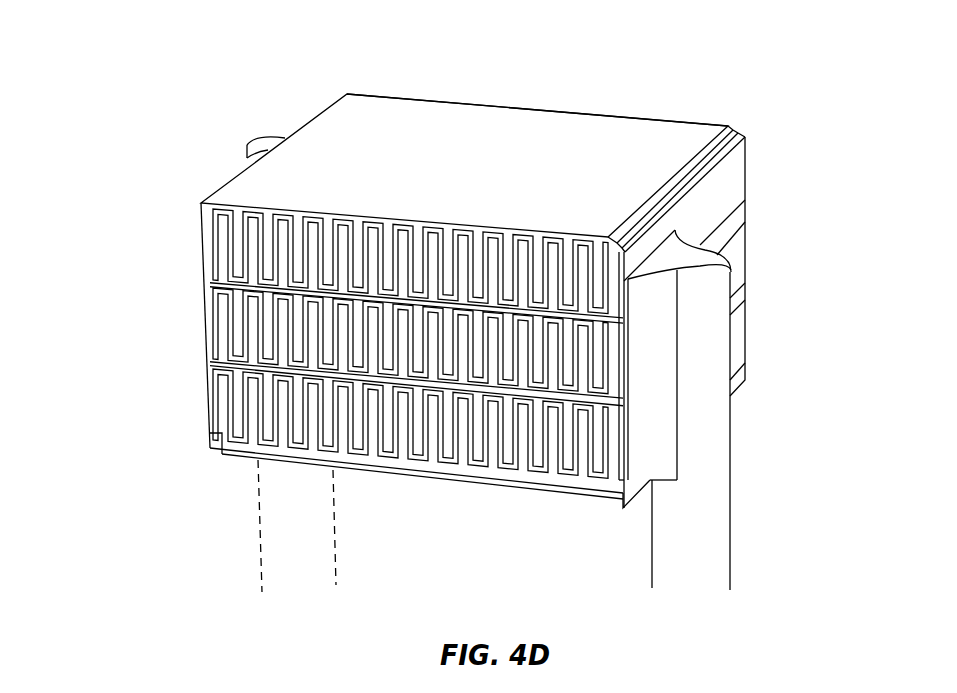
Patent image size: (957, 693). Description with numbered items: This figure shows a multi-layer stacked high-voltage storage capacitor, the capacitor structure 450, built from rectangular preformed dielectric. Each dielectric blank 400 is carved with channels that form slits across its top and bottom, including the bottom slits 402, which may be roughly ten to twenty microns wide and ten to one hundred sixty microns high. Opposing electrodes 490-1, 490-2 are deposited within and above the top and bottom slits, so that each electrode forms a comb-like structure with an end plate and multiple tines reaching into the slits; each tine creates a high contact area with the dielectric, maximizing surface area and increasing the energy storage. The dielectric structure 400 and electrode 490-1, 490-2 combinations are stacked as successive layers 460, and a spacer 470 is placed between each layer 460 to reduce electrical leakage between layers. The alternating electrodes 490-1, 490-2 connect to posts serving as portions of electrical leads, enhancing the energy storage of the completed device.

The dielectric blank 400 is at (222, 212).
The bottom slits 402 is at (532, 468).
The capacitor structure 450 is at (792, 153).
The layer 460 is at (215, 400).
The spacer 470 is at (220, 448).
The electrode 490-1 is at (608, 243).
The electrode 490-2 is at (623, 473).